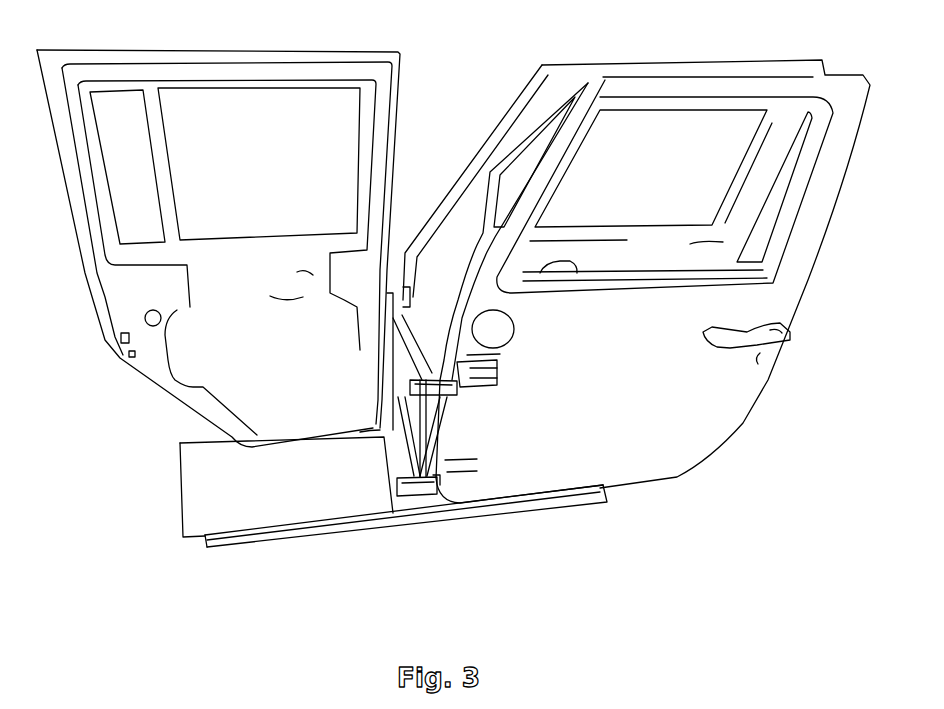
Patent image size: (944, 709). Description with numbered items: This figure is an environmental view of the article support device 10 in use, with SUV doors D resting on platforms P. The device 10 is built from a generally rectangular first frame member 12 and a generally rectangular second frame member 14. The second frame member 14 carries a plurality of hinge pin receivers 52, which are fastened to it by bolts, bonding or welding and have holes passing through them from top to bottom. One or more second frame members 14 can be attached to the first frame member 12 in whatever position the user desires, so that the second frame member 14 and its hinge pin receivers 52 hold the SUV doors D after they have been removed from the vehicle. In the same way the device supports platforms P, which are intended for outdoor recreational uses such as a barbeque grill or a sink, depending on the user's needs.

The article support device 10 is at (517, 530).
The first frame member 12 is at (332, 530).
The second frame member 14 is at (432, 437).
The hinge pin receiver 52 is at (457, 390).
The SUV door D is at (631, 282).
The platform P is at (272, 514).